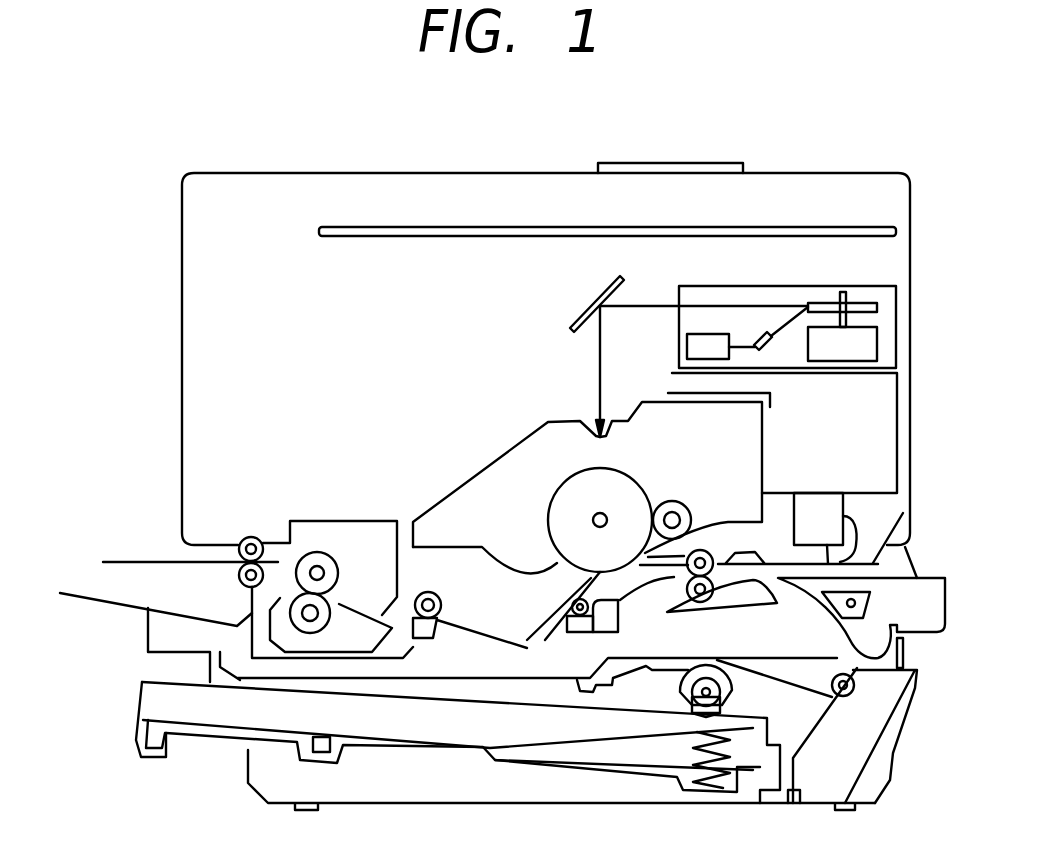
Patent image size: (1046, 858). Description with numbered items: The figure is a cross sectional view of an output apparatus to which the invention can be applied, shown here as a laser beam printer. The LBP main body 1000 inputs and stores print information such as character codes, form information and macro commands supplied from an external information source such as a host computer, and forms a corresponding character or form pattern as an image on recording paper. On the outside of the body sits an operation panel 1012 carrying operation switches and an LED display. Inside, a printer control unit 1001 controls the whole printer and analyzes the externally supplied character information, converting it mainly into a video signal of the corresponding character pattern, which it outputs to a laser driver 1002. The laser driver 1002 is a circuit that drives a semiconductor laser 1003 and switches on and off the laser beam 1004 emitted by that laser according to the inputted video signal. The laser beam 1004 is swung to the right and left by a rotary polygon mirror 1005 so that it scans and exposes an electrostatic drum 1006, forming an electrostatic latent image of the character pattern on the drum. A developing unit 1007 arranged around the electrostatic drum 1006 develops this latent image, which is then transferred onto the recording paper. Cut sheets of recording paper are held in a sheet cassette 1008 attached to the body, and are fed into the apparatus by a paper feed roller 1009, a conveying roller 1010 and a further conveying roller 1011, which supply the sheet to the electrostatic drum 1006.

The LBP main body 1000 is at (830, 173).
The printer control unit 1001 is at (835, 227).
The laser driver 1002 is at (687, 345).
The semiconductor laser 1003 is at (768, 345).
The laser beam 1004 is at (770, 306).
The rotary polygon mirror 1005 is at (870, 302).
The electrostatic drum 1006 is at (633, 476).
The developing unit 1007 is at (468, 493).
The sheet cassette 1008 is at (142, 697).
The paper feed roller 1009 is at (692, 690).
The conveying roller 1010 is at (848, 694).
The conveying roller 1011 is at (717, 611).
The operation panel 1012 is at (722, 142).